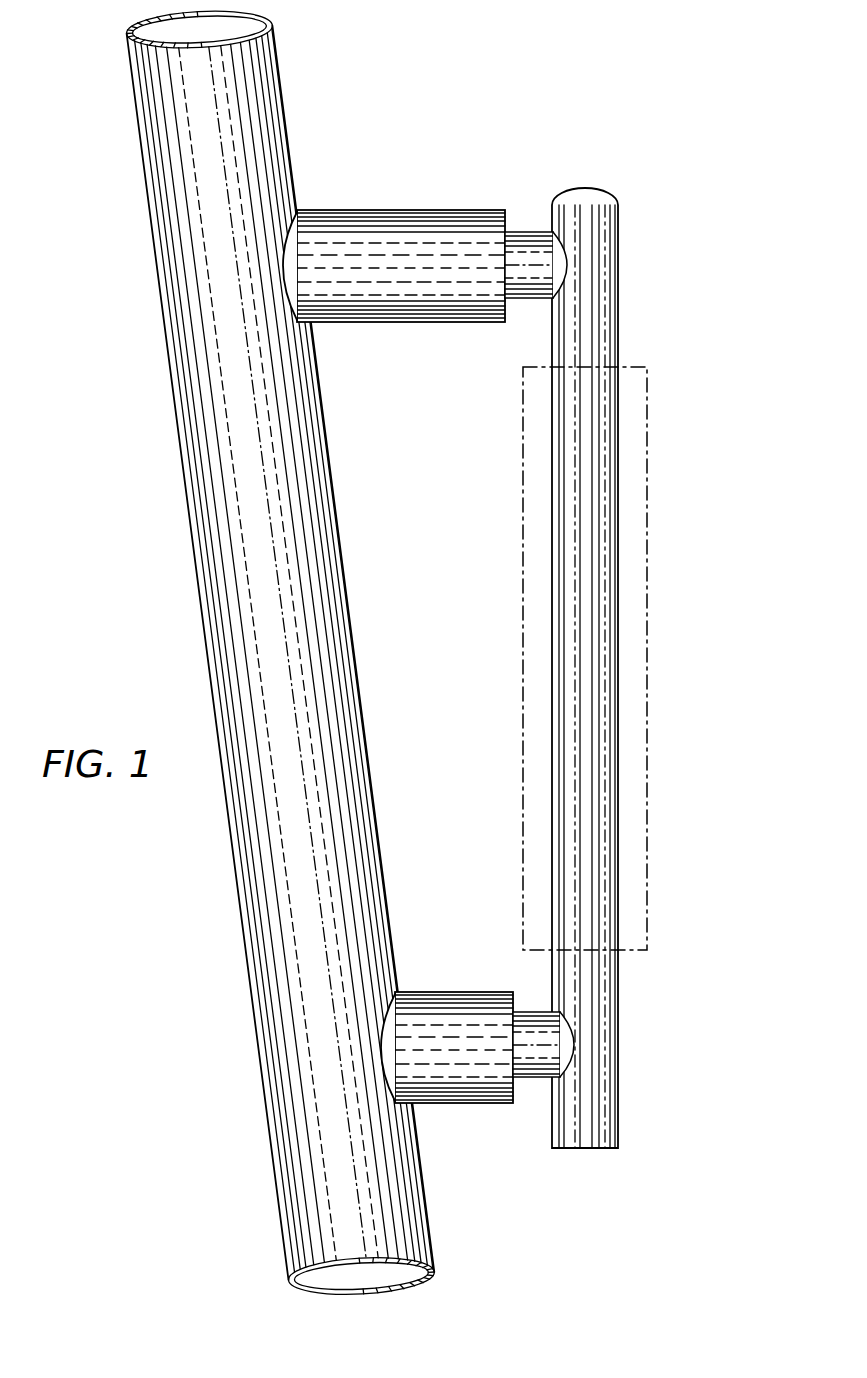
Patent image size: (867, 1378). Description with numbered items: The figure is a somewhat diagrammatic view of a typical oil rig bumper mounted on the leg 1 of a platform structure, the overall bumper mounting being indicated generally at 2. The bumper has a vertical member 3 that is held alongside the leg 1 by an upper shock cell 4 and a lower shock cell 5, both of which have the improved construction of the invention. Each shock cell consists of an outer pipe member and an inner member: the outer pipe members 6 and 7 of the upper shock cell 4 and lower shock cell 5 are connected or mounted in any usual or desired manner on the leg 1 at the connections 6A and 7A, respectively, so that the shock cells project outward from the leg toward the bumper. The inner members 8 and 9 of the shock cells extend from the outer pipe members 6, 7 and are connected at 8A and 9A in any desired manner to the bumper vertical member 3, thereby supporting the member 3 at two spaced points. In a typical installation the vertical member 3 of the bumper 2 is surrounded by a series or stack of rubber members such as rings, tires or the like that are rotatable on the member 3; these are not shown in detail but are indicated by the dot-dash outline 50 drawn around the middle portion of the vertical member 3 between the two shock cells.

The leg 1 is at (232, 575).
The bumper 2 is at (662, 616).
The vertical member 3 is at (607, 1005).
The upper shock cell 4 is at (438, 245).
The lower shock cell 5 is at (502, 1057).
The outer pipe member 6 is at (400, 275).
The connection of outer pipe member to leg 6A is at (287, 271).
The outer pipe member 7 is at (455, 1020).
The connection of outer pipe member to leg 7A is at (383, 1047).
The inner member 8 is at (527, 246).
The connection of inner member to vertical member 8A is at (565, 260).
The inner member 9 is at (527, 1065).
The connection of inner member to vertical member 9A is at (578, 1046).
The dot-dash outline of rubber members 50 is at (652, 765).